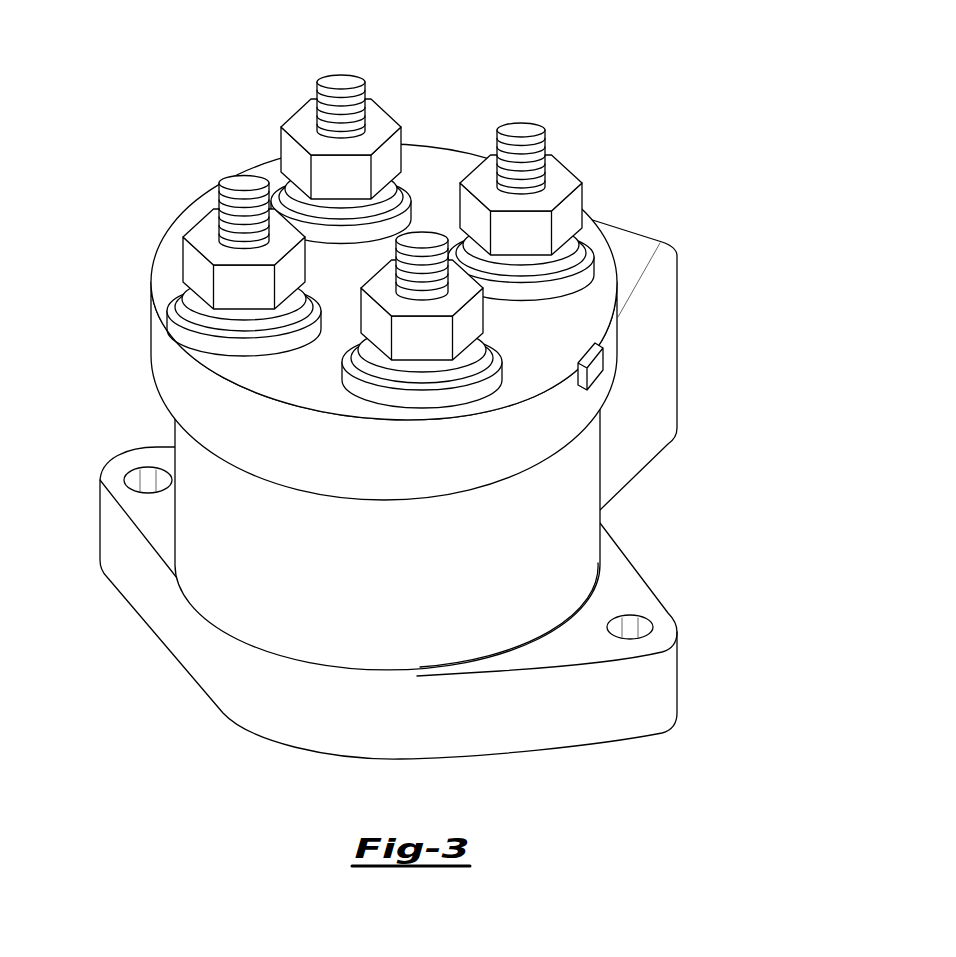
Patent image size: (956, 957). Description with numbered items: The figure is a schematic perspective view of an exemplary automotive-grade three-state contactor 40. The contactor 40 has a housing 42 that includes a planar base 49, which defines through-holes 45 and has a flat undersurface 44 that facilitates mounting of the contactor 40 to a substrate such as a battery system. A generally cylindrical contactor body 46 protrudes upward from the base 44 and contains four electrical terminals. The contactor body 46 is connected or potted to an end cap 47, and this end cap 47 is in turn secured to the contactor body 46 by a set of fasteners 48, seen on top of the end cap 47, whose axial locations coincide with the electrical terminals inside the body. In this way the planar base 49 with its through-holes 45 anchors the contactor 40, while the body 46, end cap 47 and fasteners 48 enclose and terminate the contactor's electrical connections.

The three-state contactor 40 is at (407, 417).
The housing 42 is at (357, 348).
The flat undersurface 44 is at (543, 747).
The through-holes 45 is at (147, 480).
The contactor body 46 is at (571, 560).
The end cap 47 is at (168, 268).
The fasteners 48 is at (341, 80).
The planar base 49 is at (250, 693).